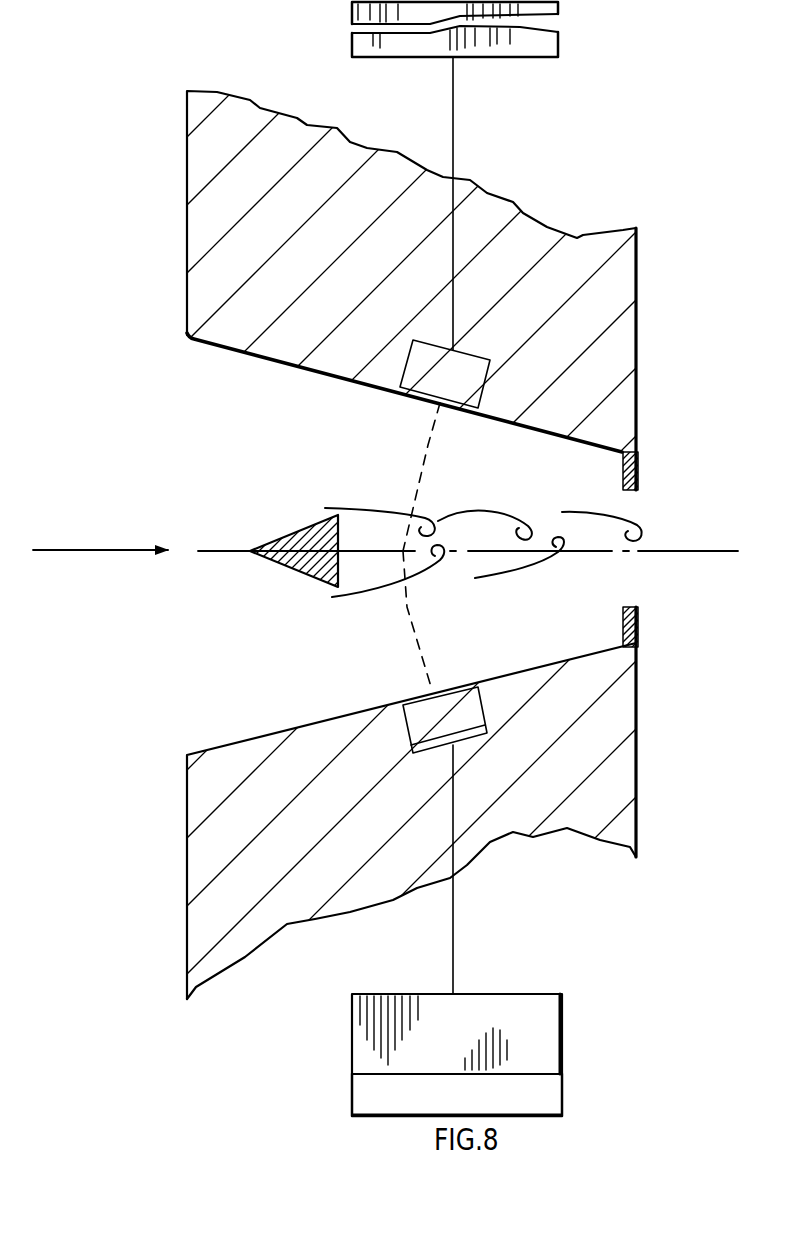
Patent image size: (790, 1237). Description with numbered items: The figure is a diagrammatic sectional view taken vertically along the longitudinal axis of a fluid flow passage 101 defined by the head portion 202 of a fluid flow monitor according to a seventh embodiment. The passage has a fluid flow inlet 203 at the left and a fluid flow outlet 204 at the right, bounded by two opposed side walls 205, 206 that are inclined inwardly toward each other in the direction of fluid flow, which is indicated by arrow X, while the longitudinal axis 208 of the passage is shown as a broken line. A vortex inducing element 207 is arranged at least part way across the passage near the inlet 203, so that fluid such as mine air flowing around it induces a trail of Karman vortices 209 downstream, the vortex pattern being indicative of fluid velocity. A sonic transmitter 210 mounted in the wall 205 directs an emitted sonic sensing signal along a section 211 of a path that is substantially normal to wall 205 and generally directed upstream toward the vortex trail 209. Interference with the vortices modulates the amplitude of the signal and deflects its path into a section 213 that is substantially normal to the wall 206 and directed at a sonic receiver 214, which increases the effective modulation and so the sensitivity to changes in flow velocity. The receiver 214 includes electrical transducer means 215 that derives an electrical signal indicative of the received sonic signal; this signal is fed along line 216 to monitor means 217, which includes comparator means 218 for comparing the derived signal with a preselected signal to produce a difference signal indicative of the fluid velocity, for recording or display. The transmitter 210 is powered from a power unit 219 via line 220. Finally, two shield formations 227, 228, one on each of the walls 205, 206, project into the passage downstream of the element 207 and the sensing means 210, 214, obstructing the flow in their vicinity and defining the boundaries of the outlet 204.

The flow passage 101 is at (185, 700).
The head portion 202 is at (177, 865).
The fluid flow inlet 203 is at (152, 607).
The fluid flow outlet 204 is at (640, 522).
The side wall 205 is at (520, 423).
The side wall 206 is at (548, 662).
The vortex inducing element 207 is at (293, 560).
The longitudinal axis 208 is at (672, 552).
The Karman vortices 209 is at (443, 510).
The sonic transmitter 210 is at (447, 383).
The section of path 211 is at (427, 455).
The section of path 213 is at (400, 645).
The sonic receiver 214 is at (468, 712).
The electrical transducer means 215 is at (468, 733).
The line 216 is at (458, 912).
The monitor means 217 is at (553, 1036).
The comparator means 218 is at (553, 1095).
The power unit 219 is at (522, 28).
The line 220 is at (457, 128).
The shield formation 227 is at (641, 462).
The shield formation 228 is at (640, 628).